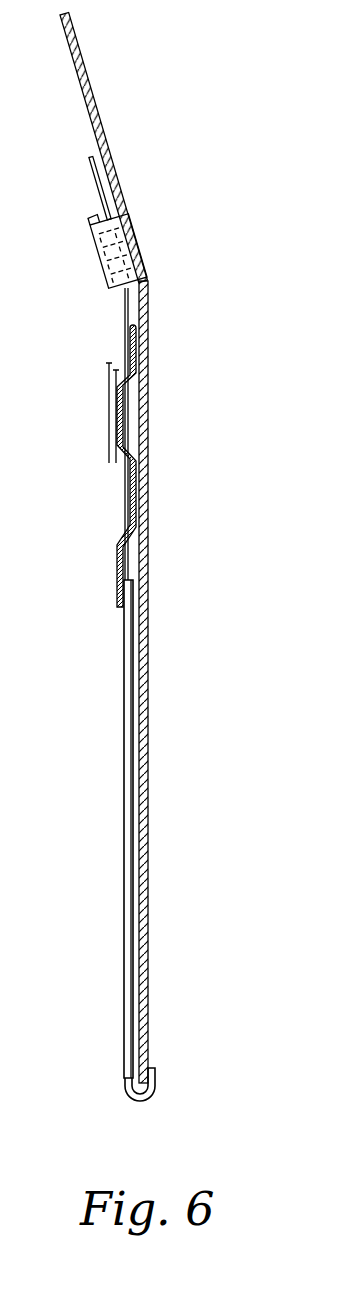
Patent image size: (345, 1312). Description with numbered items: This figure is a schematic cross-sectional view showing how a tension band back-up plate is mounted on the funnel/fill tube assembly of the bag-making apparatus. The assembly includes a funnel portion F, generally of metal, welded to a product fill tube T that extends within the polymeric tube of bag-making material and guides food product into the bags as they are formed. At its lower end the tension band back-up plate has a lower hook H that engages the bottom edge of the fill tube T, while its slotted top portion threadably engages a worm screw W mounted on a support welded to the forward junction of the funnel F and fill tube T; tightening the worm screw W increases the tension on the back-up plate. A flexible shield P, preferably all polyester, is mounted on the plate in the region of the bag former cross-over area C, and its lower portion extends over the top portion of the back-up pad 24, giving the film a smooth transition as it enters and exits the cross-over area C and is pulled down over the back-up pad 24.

The funnel portion F is at (97, 97).
The worm screw W is at (93, 268).
The product fill tube T is at (148, 296).
The flexible shield P is at (128, 397).
The bag former cross-over area C is at (108, 452).
The back-up pad 24 is at (124, 1000).
The lower hook H is at (156, 1082).